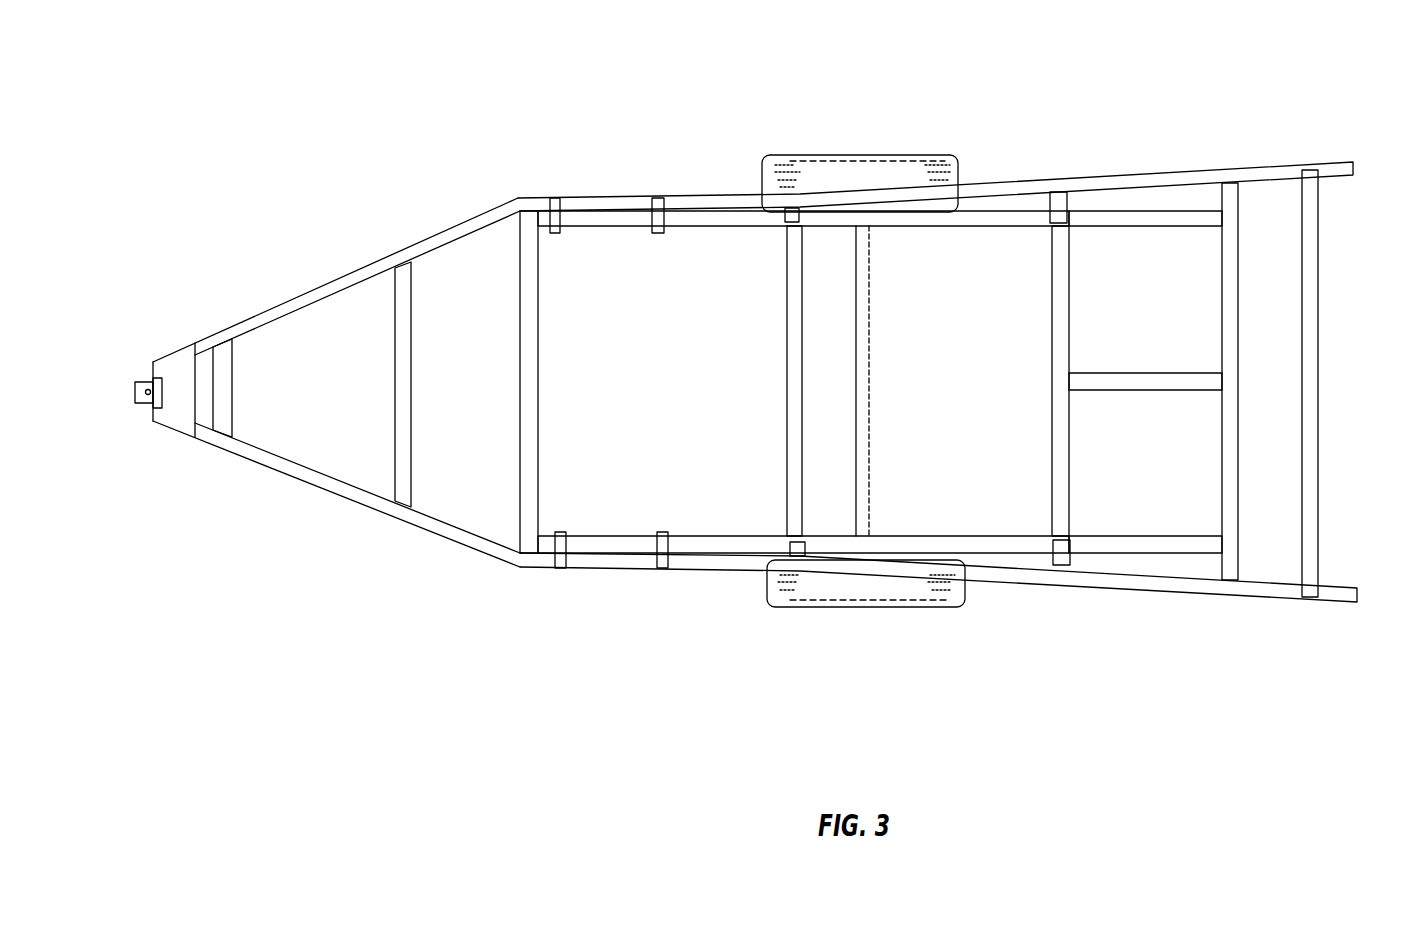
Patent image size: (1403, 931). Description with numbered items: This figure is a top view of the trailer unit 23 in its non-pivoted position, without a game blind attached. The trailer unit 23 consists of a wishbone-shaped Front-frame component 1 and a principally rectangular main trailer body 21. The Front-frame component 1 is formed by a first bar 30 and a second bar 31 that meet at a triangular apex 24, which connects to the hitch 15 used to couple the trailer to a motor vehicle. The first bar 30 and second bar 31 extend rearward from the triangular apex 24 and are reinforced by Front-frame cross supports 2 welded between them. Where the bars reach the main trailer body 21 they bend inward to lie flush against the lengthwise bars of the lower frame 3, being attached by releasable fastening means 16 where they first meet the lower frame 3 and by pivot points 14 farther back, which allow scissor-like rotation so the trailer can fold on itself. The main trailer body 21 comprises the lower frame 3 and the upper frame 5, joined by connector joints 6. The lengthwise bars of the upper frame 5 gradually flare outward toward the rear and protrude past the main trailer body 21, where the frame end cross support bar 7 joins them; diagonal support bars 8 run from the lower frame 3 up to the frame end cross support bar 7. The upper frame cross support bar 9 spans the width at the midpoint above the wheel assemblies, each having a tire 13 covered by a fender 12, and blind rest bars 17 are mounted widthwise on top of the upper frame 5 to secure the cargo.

The Front-frame component 1 is at (690, 600).
The Front-frame cross support 2 is at (226, 400).
The lower frame 3 is at (540, 380).
The upper frame 5 is at (1158, 178).
The connector joint 6 is at (785, 218).
The frame end cross support bar 7 is at (1240, 355).
The diagonal support bar 8 is at (1176, 227).
The upper frame cross support bar 9 is at (788, 393).
The fender 12 is at (787, 156).
The tire 13 is at (869, 175).
The pivot point 14 is at (667, 206).
The hitch 15 is at (140, 385).
The releasable fastening means 16 is at (551, 205).
The blind rest bar 17 is at (540, 483).
The main trailer body 21 is at (1365, 703).
The trailer unit 23 is at (157, 122).
The triangular apex 24 is at (153, 405).
The first bar 30 is at (319, 481).
The second bar 31 is at (302, 297).